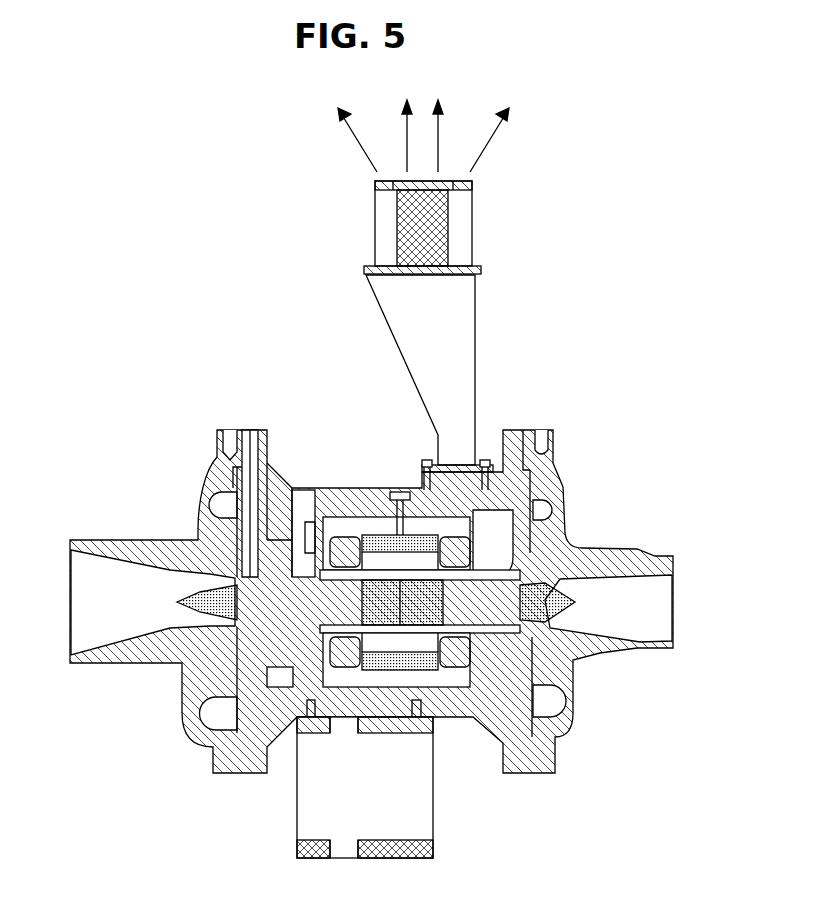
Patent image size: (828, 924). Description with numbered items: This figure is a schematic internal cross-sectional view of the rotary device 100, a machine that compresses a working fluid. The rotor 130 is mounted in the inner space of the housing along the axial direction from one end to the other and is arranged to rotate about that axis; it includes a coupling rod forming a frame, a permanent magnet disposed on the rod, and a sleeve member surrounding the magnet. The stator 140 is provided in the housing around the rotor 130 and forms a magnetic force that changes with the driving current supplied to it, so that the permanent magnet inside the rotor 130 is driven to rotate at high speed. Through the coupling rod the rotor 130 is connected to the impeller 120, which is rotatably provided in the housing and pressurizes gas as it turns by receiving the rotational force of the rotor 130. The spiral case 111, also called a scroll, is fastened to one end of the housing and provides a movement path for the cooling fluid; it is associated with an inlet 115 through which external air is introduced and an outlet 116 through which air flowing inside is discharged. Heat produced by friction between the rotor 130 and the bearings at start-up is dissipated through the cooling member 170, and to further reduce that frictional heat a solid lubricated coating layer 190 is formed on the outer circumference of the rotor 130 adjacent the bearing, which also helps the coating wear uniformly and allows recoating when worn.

The rotary device 100 is at (120, 171).
The spiral case 111 is at (212, 470).
The inlet 115 is at (253, 432).
The outlet 116 is at (463, 321).
The impeller 120 is at (223, 625).
The rotor 130 is at (563, 642).
The stator 140 is at (425, 672).
The cooling member 170 is at (448, 222).
The coating layer 190 is at (282, 533).